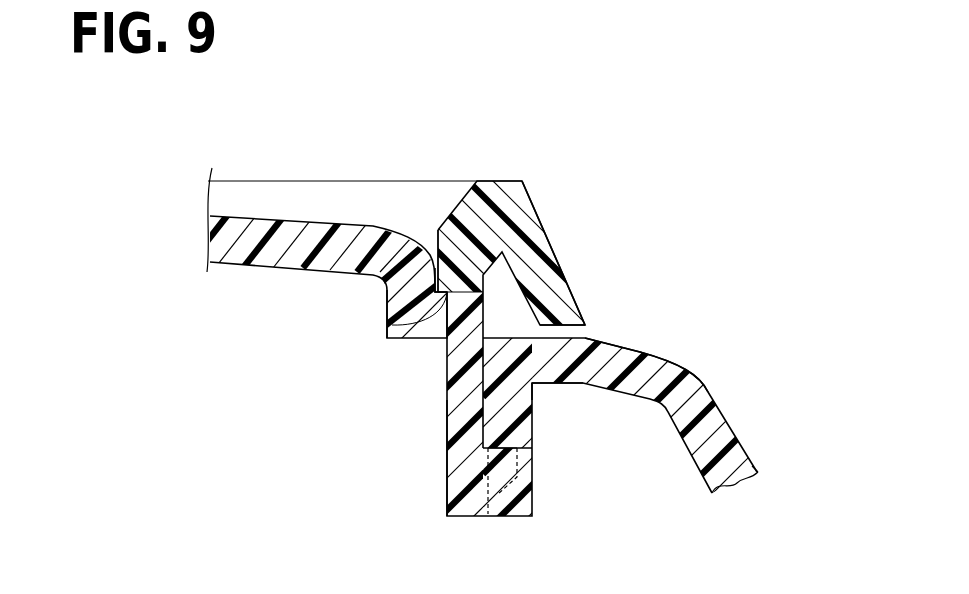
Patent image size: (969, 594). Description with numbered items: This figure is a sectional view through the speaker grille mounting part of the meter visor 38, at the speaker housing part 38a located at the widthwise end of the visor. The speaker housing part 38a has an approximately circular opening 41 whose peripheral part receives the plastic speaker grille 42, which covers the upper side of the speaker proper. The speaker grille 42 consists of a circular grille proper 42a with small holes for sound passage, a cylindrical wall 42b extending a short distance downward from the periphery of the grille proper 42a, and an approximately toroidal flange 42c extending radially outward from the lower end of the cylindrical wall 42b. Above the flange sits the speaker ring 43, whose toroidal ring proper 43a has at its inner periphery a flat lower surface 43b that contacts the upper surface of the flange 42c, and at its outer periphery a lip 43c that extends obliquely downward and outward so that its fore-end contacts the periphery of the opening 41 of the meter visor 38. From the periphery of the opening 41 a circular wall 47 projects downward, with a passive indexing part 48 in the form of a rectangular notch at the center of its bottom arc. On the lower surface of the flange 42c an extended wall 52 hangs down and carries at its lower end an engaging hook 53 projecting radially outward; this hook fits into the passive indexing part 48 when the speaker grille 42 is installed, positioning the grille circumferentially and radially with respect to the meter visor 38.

The meter visor 38 is at (753, 442).
The speaker housing part 38a is at (640, 351).
The opening 41 is at (456, 421).
The speaker grille 42 is at (266, 206).
The grille proper 42a is at (215, 216).
The cylindrical wall 42b is at (390, 281).
The flange 42c is at (473, 187).
The speaker ring 43 is at (418, 170).
The ring proper 43a is at (504, 182).
The flat lower surface 43b is at (444, 294).
The lip 43c is at (559, 319).
The circular wall 47 is at (533, 398).
The passive indexing part 48 is at (534, 484).
The extended wall 52 is at (475, 428).
The engaging hook 53 is at (504, 484).